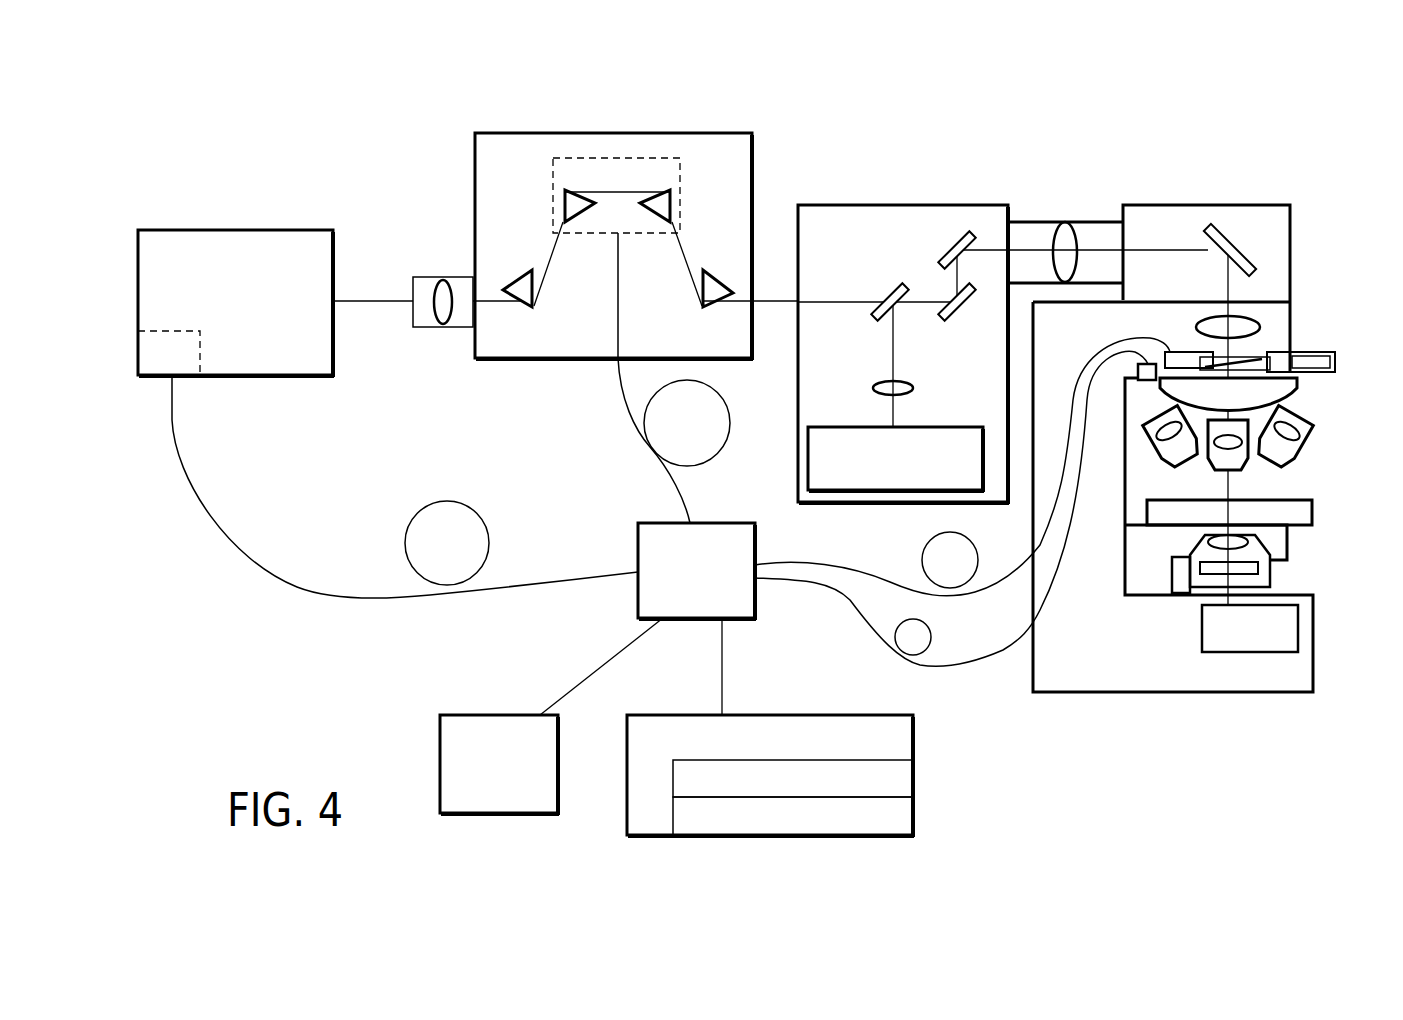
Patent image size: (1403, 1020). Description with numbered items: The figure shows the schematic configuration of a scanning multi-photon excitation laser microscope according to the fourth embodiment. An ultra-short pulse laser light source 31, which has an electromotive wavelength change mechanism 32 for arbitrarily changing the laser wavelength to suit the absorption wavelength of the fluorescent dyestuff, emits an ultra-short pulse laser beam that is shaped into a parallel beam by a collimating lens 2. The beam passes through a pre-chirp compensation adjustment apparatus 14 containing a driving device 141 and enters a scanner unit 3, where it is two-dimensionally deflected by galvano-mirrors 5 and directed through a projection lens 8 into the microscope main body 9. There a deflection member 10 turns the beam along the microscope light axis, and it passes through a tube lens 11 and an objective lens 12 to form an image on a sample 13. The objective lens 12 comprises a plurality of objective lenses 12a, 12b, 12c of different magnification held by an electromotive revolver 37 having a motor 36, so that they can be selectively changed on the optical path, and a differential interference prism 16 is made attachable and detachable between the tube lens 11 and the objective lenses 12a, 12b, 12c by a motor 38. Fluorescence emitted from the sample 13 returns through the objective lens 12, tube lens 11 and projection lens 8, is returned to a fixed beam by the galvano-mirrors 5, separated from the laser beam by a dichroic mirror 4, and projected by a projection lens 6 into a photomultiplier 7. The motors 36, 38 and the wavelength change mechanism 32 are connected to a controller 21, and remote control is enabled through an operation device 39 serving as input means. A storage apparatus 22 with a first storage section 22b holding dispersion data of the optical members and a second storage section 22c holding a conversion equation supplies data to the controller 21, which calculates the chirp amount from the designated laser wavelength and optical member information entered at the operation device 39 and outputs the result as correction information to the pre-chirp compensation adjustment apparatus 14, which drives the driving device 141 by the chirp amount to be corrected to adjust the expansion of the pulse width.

The ultra-short pulse laser light source 31 is at (296, 230).
The wavelength change mechanism 32 is at (192, 378).
The collimating lens 2 is at (447, 277).
The pre-chirp compensation adjustment apparatus 14 is at (498, 133).
The driving device 141 is at (620, 158).
The scanner unit 3 is at (860, 205).
The dichroic mirror 4 is at (887, 293).
The galvano-mirror 5 is at (950, 245).
The projection lens 6 is at (914, 386).
The photomultiplier 7 is at (975, 427).
The projection lens 8 is at (1068, 222).
The microscope main body 9 is at (1098, 694).
The deflection member 10 is at (1245, 252).
The tube lens 11 is at (1212, 315).
The objective lens 12 is at (1271, 480).
The objective lens 12a is at (1313, 442).
The objective lens 12b is at (1258, 472).
The objective lens 12c is at (1175, 462).
The sample 13 is at (1227, 498).
The differential interference prism 16 is at (1280, 345).
The motor 36 is at (1140, 384).
The electromotive revolver 37 is at (1300, 383).
The motor 38 is at (1186, 352).
The controller 21 is at (637, 546).
The storage apparatus 22 is at (777, 776).
The first storage section 22b is at (913, 778).
The second storage section 22c is at (913, 815).
The operation device 39 is at (440, 770).